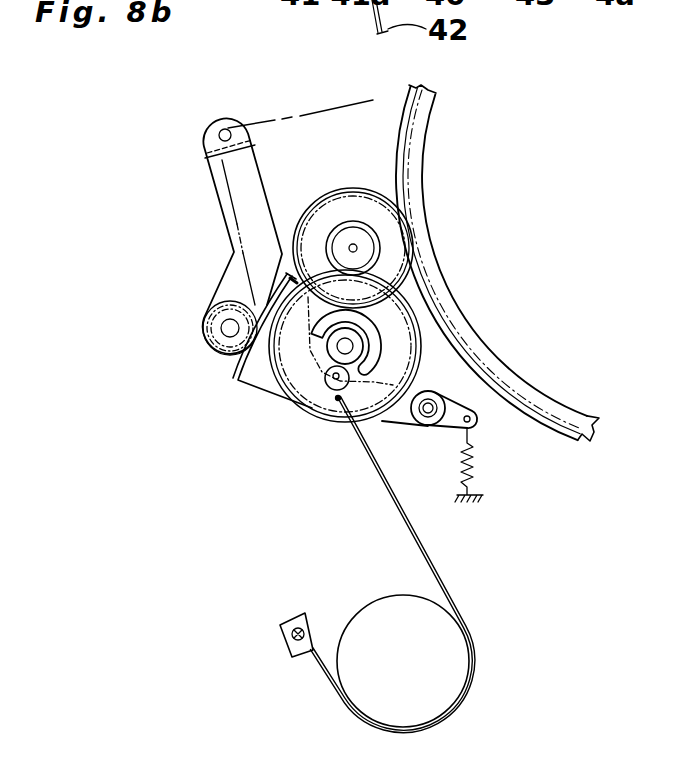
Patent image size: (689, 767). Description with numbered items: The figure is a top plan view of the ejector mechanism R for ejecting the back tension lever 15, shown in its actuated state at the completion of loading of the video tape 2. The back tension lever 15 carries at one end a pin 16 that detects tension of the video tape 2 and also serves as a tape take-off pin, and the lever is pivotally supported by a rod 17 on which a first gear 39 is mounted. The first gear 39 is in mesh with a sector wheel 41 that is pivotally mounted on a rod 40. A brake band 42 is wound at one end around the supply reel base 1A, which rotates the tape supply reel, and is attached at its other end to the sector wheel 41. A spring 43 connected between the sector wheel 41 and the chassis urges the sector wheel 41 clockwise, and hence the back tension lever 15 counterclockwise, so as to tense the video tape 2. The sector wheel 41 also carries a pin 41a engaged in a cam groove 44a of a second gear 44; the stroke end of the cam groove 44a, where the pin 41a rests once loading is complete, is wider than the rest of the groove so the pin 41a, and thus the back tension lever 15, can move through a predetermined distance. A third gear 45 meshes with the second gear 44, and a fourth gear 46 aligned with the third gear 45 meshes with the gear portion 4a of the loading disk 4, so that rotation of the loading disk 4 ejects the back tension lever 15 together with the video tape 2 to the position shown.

The supply reel base 1A is at (433, 673).
The video tape 2 is at (305, 116).
The ejector mechanism R is at (278, 115).
The loading disk 4 is at (558, 408).
The gear portion 4a is at (576, 444).
The back tension lever 15 is at (213, 190).
The pin 16 is at (218, 132).
The rod 17 is at (226, 330).
The first gear 39 is at (205, 318).
The rod 40 is at (428, 418).
The sector wheel 41 is at (258, 385).
The pin 41a is at (333, 378).
The brake band 42 is at (378, 488).
The spring 43 is at (478, 468).
The second gear 44 is at (402, 297).
The cam groove 44a is at (392, 341).
The third gear 45 is at (358, 222).
The fourth gear 46 is at (320, 212).